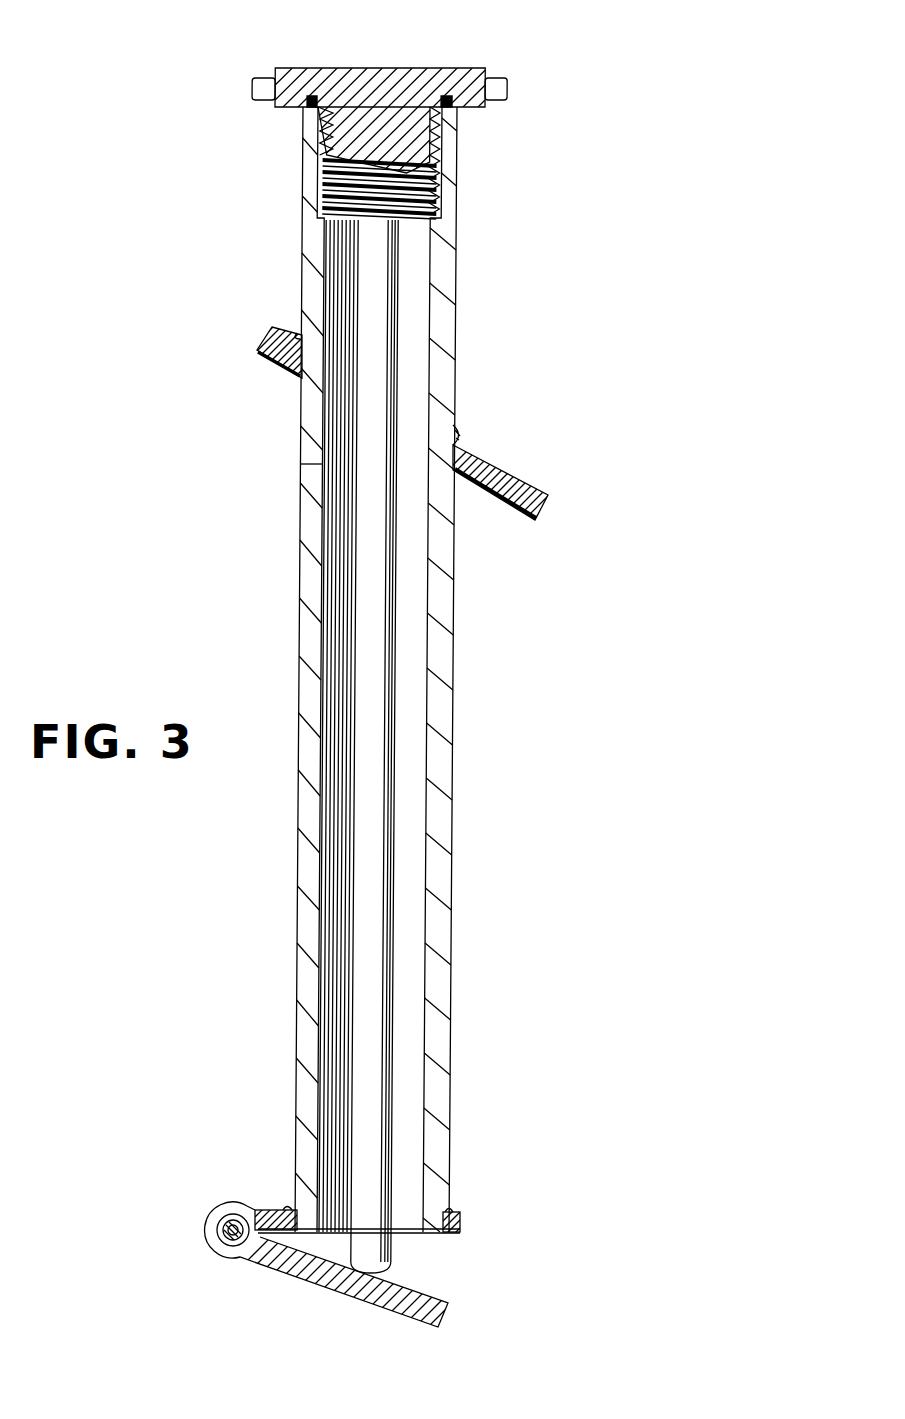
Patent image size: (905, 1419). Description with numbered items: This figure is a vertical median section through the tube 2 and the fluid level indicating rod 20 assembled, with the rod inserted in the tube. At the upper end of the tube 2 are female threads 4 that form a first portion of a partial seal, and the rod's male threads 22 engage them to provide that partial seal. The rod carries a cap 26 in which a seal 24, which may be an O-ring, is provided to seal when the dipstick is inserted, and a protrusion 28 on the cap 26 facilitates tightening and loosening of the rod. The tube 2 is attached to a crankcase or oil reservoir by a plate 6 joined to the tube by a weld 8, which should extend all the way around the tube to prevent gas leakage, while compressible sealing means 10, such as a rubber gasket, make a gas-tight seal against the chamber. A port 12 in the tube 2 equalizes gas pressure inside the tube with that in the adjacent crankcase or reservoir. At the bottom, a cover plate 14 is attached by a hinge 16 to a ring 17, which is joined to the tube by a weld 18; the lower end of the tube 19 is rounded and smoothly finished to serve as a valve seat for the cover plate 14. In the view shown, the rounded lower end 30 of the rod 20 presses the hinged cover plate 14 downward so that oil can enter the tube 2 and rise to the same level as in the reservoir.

The tube 2 is at (276, 622).
The female threads 4 is at (327, 137).
The plate 6 is at (522, 478).
The weld 8 is at (458, 436).
The compressible sealing means 10 is at (488, 492).
The port 12 is at (322, 466).
The cover plate 14 is at (345, 1288).
The hinge 16 is at (216, 1238).
The ring 17 is at (272, 1216).
The weld 18 is at (450, 1214).
The lower end of the tube 19 is at (438, 1236).
The fluid level indicating rod 20 is at (412, 685).
The male threads 22 is at (433, 165).
The seal 24 is at (445, 100).
The cap 26 is at (383, 75).
The protrusion 28 is at (265, 82).
The lower end of the indicating rod 30 is at (371, 1274).